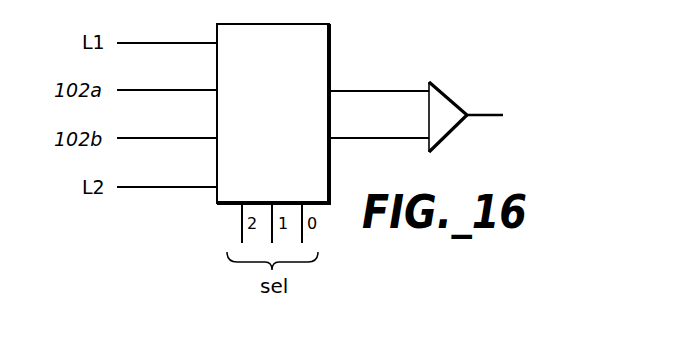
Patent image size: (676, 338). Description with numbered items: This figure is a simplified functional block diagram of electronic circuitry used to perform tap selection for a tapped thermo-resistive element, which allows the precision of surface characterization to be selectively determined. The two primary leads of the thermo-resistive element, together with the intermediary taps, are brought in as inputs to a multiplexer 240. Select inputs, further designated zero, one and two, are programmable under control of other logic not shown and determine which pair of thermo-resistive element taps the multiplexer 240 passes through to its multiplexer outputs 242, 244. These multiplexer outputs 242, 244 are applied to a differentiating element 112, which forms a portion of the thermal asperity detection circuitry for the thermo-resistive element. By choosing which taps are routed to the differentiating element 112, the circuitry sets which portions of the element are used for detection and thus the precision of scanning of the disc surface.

The multiplexer 240 is at (331, 60).
The multiplexer output 242 is at (358, 91).
The multiplexer output 244 is at (358, 138).
The differentiating element 112 is at (447, 97).